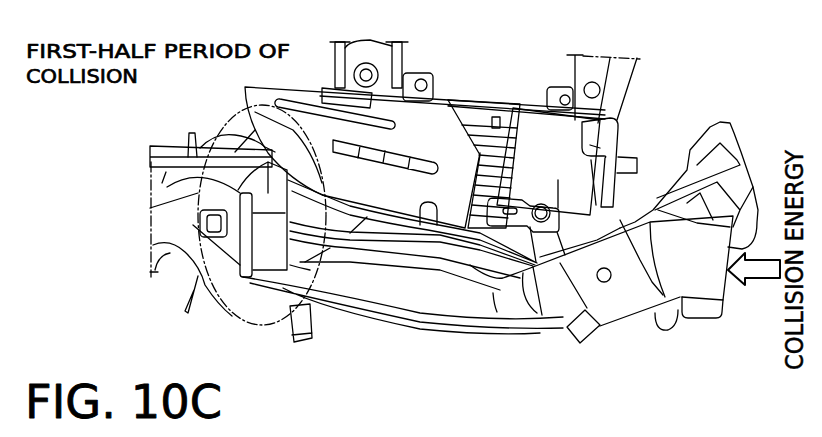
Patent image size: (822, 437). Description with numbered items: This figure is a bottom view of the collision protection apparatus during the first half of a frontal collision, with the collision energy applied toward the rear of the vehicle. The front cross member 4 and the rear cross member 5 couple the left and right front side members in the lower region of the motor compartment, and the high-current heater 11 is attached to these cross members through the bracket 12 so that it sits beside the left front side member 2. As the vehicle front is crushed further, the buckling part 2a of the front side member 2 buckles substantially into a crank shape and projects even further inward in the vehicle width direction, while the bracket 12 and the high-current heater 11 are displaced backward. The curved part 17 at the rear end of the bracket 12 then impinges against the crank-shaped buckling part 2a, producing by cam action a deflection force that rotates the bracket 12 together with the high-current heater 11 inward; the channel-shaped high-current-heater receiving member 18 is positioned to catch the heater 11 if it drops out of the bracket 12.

The front side member 2 is at (423, 293).
The buckling part 2a is at (273, 250).
The front cross member 4 is at (627, 93).
The rear cross member 5 is at (402, 63).
The high-current heater 11 is at (483, 193).
The bracket 12 is at (370, 217).
The curved part 17 is at (240, 128).
The high-current-heater receiving member 18 is at (525, 117).